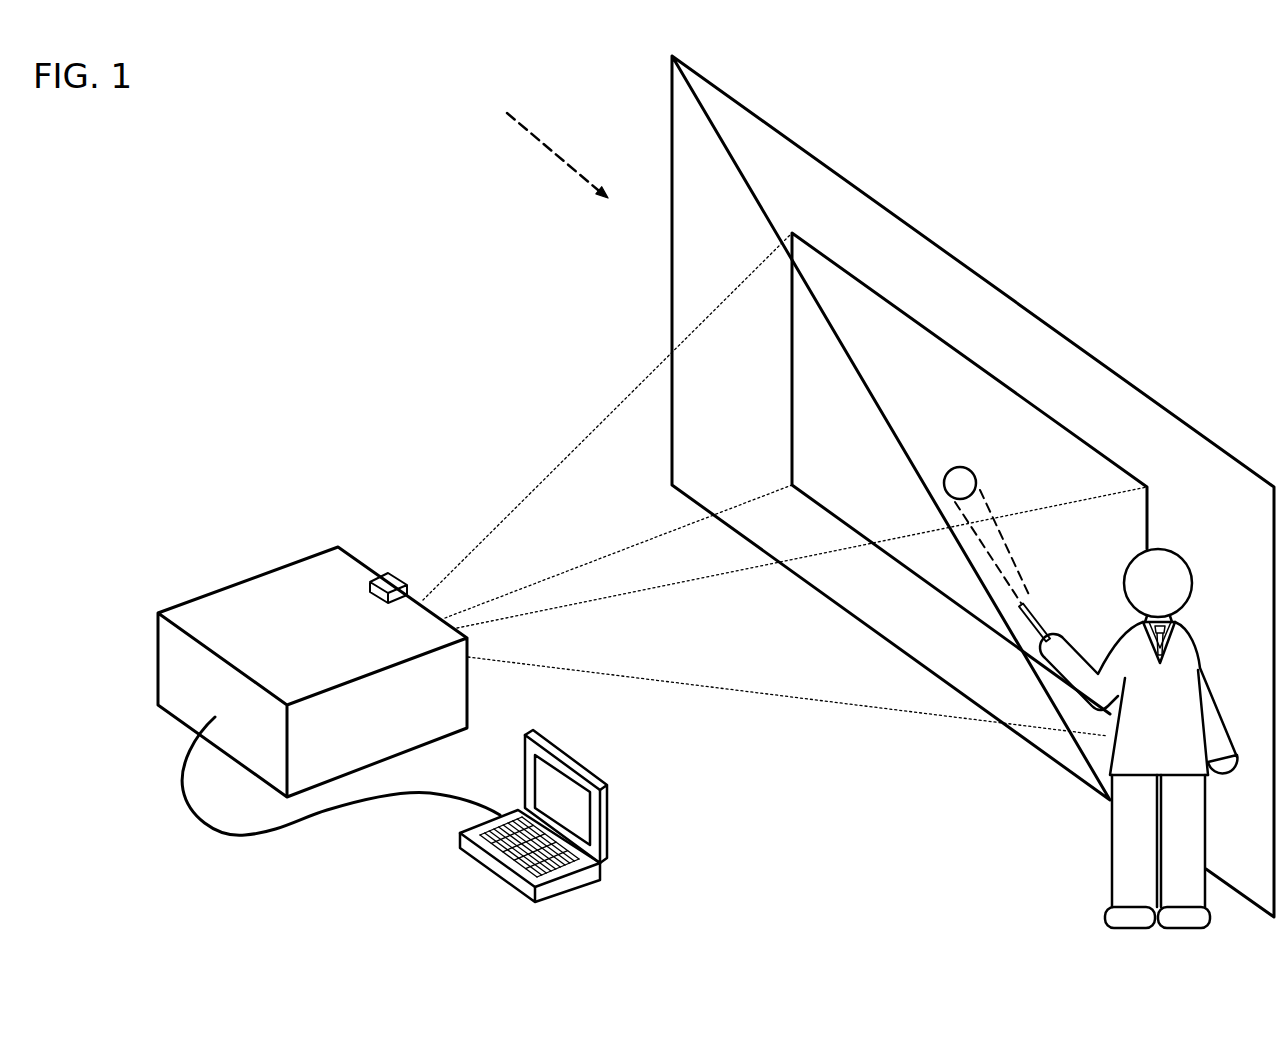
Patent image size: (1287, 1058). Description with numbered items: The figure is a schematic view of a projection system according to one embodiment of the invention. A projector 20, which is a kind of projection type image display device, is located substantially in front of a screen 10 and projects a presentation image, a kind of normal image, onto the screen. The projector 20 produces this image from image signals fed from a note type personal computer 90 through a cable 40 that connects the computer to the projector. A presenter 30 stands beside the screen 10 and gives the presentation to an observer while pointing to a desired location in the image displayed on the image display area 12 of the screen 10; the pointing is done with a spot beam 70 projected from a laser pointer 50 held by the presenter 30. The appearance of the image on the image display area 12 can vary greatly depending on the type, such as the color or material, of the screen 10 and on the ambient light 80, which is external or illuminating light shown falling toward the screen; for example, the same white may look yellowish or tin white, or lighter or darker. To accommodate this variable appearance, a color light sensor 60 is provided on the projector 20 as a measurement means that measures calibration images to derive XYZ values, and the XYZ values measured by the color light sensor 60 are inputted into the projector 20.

The screen 10 is at (1017, 300).
The image display area 12 is at (1010, 390).
The projector 20 is at (445, 692).
The presenter 30 is at (1158, 548).
The cable 40 is at (358, 806).
The laser pointer 50 is at (1043, 624).
The color light sensor 60 is at (388, 580).
The spot beam 70 is at (975, 472).
The ambient light 80 is at (528, 128).
The note type personal computer 90 is at (607, 805).